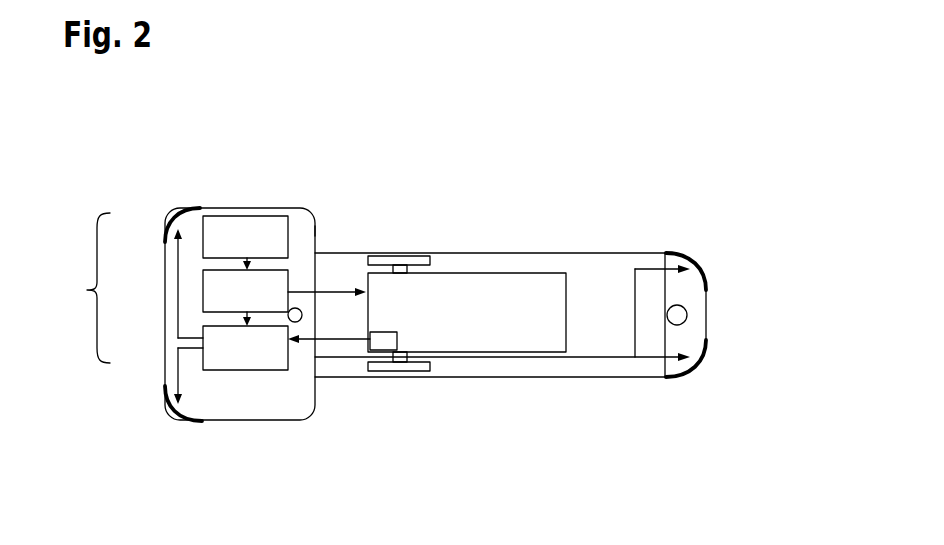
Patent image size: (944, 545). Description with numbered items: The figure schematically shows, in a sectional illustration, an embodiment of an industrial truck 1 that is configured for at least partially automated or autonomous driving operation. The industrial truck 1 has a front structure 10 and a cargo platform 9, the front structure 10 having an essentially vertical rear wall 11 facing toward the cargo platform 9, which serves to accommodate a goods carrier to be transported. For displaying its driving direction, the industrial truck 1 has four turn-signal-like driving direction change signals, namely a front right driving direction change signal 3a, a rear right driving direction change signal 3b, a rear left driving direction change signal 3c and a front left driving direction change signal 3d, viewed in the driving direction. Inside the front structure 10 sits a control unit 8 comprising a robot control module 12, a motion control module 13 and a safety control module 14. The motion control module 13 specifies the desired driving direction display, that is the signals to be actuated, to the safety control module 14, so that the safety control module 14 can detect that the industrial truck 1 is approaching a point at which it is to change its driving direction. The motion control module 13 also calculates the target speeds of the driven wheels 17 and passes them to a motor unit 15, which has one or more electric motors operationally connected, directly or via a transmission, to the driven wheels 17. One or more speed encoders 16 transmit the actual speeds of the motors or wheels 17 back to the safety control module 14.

The industrial truck 1 is at (684, 187).
The front right driving direction change signal 3a is at (177, 207).
The rear right driving direction change signal 3b is at (705, 258).
The rear left driving direction change signal 3c is at (698, 373).
The front left driving direction change signal 3d is at (178, 423).
The control unit 8 is at (90, 288).
The cargo platform 9 is at (620, 273).
The front structure 10 is at (275, 208).
The rear wall 11 is at (316, 231).
The robot control module 12 is at (203, 248).
The motion control module 13 is at (203, 296).
The safety control module 14 is at (208, 327).
The motor unit 15 is at (512, 290).
The speed encoder 16 is at (385, 352).
The driven wheels 17 is at (425, 256).